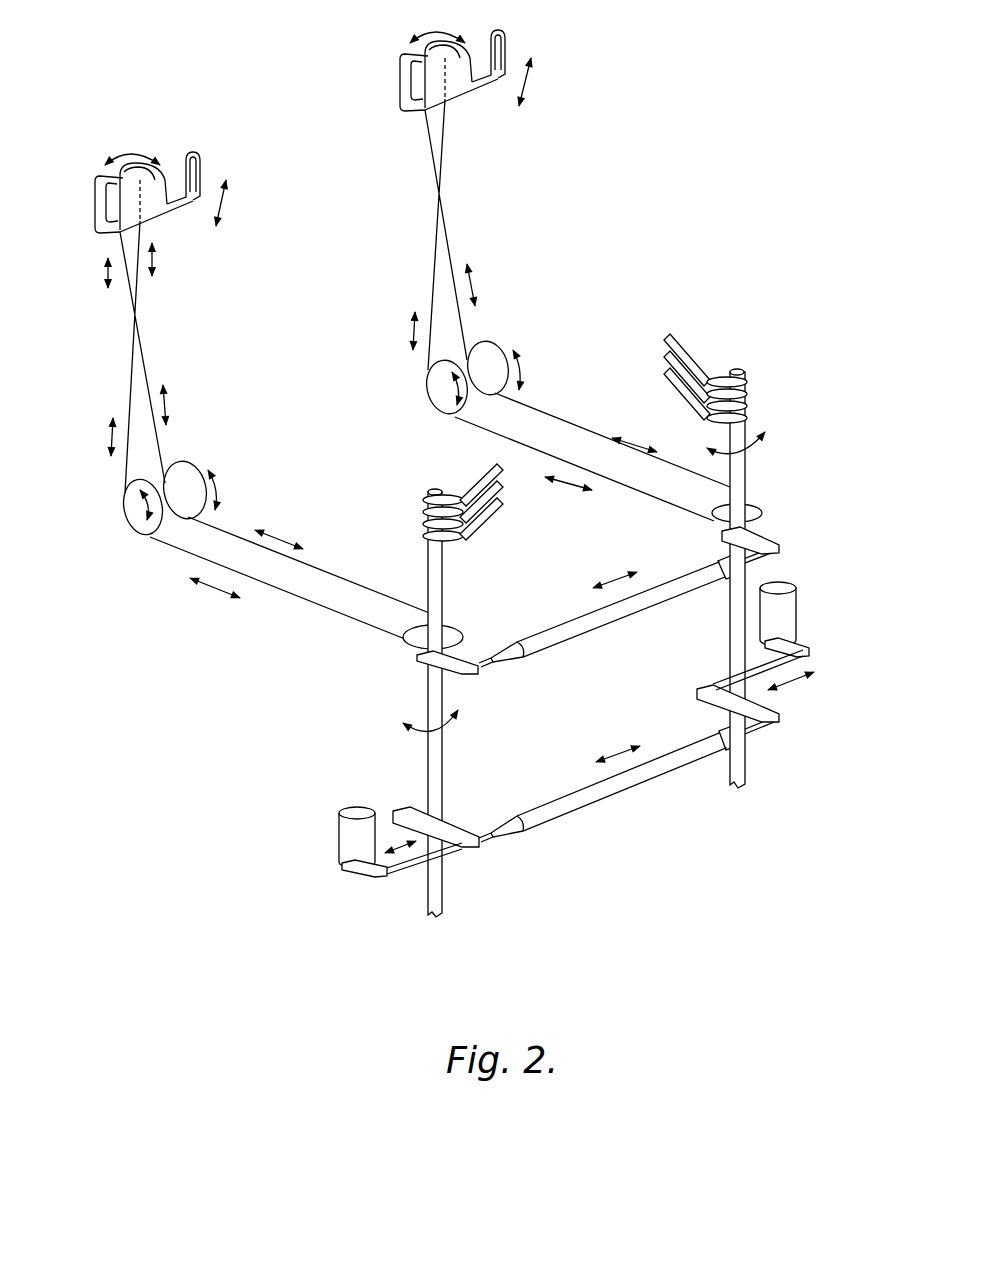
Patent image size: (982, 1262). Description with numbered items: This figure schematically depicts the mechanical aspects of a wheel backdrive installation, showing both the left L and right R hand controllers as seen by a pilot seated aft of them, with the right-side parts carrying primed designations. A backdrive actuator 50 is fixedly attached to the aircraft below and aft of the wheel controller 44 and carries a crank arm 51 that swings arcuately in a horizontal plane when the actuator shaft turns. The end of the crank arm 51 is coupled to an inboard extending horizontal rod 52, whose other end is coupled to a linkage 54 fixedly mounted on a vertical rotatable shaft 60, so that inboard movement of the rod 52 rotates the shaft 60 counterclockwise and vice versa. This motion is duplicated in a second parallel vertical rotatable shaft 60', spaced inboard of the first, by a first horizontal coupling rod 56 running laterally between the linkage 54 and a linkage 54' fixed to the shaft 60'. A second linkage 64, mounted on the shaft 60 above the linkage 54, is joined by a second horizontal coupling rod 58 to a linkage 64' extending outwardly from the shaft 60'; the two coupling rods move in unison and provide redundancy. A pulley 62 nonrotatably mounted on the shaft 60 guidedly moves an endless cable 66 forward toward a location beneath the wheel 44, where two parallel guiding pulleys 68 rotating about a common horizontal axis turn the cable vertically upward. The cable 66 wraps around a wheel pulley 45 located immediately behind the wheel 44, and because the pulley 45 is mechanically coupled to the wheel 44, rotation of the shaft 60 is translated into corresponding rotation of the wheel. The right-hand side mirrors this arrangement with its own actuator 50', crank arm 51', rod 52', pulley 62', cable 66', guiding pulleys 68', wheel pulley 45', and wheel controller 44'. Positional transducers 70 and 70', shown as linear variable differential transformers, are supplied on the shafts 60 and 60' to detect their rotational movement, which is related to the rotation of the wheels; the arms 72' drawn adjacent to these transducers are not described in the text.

The wheel controller 44 is at (173, 185).
The wheel pulley 45 is at (85, 185).
The wheel controller 44' is at (483, 61).
The wheel pulley 45' is at (388, 62).
The endless cable 66 is at (246, 433).
The endless cable 66' is at (546, 310).
The guiding pulleys 68 is at (146, 485).
The guiding pulleys 68' is at (454, 364).
The vertical rotatable shaft 60 is at (450, 703).
The vertical rotatable shaft 60' is at (735, 578).
The pulley 62 is at (446, 622).
The pulley 62' is at (754, 500).
The second linkage 64 is at (482, 632).
The linkage 64' is at (792, 513).
The positional transducer 70 is at (489, 543).
The positional transducer 70' is at (769, 347).
The spring arms 72' is at (610, 408).
The backdrive actuator 50 is at (325, 837).
The backdrive actuator 50' is at (811, 604).
The crank arm 51 is at (338, 886).
The crank arm 51' is at (815, 628).
The horizontal rod 52 is at (412, 882).
The horizontal rod 52' is at (791, 665).
The linkage 54 is at (452, 805).
The linkage 54' is at (706, 703).
The first horizontal coupling rod 56 is at (603, 790).
The second horizontal coupling rod 58 is at (580, 627).
The left hand controller L is at (588, 897).
The right hand controller R is at (813, 790).